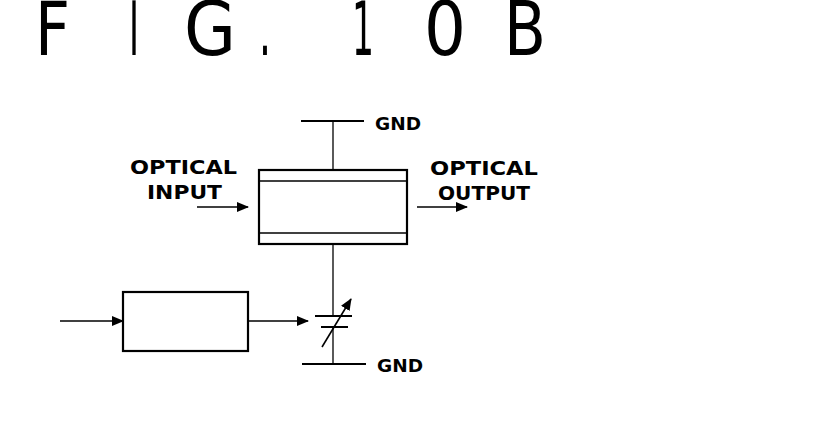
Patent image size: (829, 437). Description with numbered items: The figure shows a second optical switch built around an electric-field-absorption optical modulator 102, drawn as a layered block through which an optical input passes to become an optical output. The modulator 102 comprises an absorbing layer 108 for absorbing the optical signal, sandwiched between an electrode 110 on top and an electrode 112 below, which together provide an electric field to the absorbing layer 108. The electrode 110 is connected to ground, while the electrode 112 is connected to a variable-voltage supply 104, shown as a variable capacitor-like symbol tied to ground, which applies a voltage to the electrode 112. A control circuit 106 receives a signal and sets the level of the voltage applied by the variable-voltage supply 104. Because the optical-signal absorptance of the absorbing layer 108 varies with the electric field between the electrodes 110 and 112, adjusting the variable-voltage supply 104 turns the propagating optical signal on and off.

The electric-field-absorption optical modulator 102 is at (290, 167).
The variable-voltage supply 104 is at (357, 322).
The control circuit 106 is at (183, 352).
The absorbing layer 108 is at (273, 220).
The electrode 110 is at (263, 170).
The electrode 112 is at (375, 241).